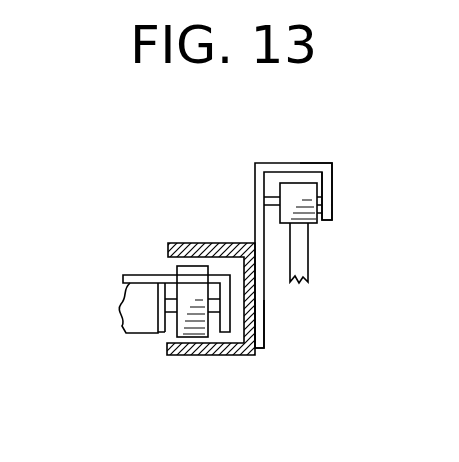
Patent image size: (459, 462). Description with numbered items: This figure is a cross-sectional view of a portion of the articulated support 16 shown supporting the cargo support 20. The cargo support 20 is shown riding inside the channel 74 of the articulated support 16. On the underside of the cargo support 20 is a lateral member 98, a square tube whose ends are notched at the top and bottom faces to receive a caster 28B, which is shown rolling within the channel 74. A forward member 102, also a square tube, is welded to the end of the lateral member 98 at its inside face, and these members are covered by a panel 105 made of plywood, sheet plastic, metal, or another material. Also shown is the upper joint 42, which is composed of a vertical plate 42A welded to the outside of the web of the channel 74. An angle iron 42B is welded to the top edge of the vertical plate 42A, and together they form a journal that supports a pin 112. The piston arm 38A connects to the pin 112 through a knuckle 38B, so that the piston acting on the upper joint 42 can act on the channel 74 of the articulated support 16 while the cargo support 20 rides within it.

The articulated support 16 is at (213, 380).
The cargo support 20 is at (98, 308).
The caster 28B is at (190, 272).
The piston arm 38A is at (310, 265).
The knuckle 38B is at (293, 190).
The upper joint 42 is at (325, 139).
The vertical plate 42A is at (264, 316).
The angle iron 42B is at (335, 182).
The channel 74 is at (241, 356).
The lateral member 98 is at (163, 332).
The forward member 102 is at (138, 318).
The panel 105 is at (133, 275).
The pin 112 is at (322, 213).